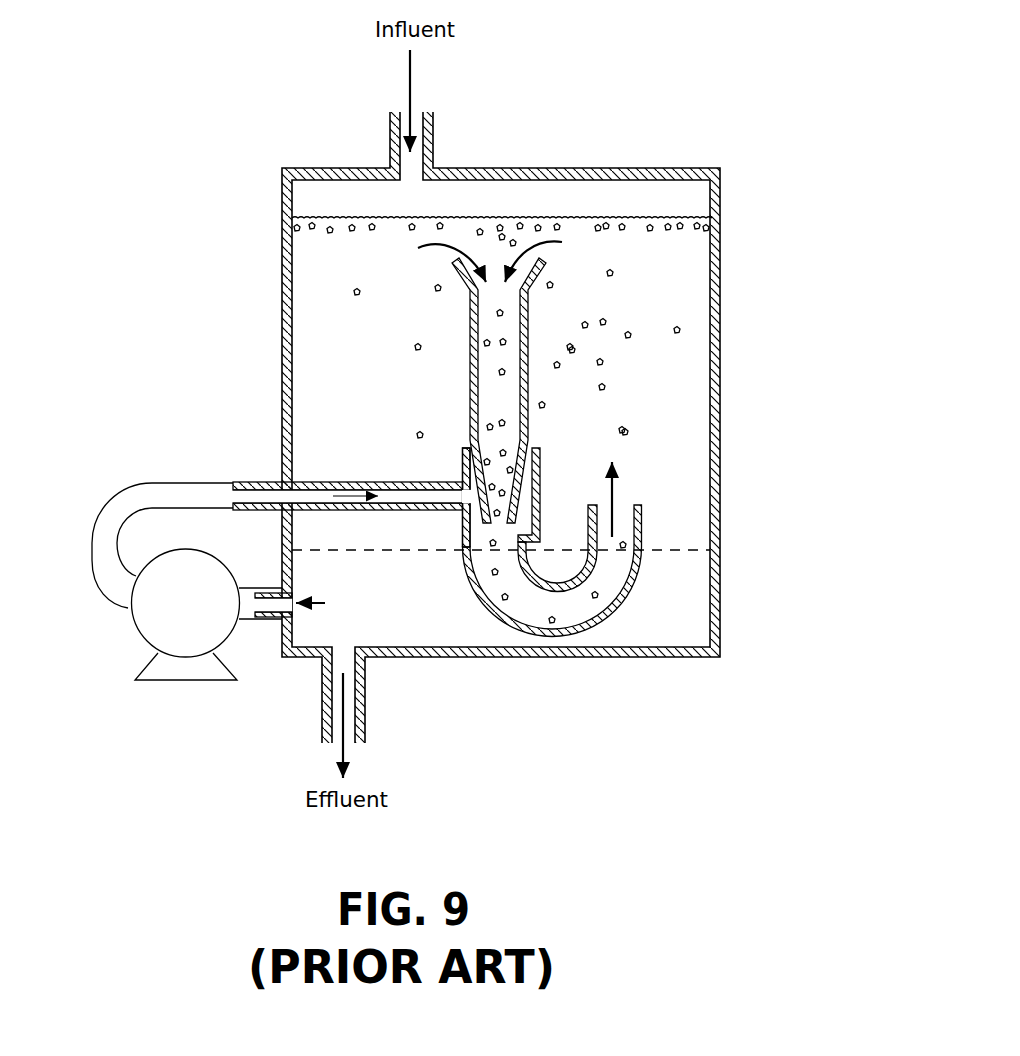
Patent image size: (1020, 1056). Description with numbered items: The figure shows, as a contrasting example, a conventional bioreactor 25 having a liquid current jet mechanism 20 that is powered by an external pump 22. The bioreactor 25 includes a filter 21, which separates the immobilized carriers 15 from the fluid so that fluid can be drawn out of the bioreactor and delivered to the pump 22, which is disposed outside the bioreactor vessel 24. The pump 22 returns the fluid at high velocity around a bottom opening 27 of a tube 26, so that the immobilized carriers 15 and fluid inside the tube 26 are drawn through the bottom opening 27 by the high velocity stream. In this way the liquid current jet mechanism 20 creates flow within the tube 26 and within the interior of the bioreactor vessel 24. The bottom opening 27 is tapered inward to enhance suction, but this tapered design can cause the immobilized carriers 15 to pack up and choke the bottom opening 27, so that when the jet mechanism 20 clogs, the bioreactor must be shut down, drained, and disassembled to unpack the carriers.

The immobilized carriers 15 is at (352, 291).
The liquid current jet mechanism 20 is at (553, 451).
The filter 21 is at (675, 550).
The external pump 22 is at (198, 615).
The bioreactor vessel 24 is at (720, 297).
The bioreactor 25 is at (660, 397).
The tube 26 is at (470, 358).
The bottom opening 27 is at (495, 530).